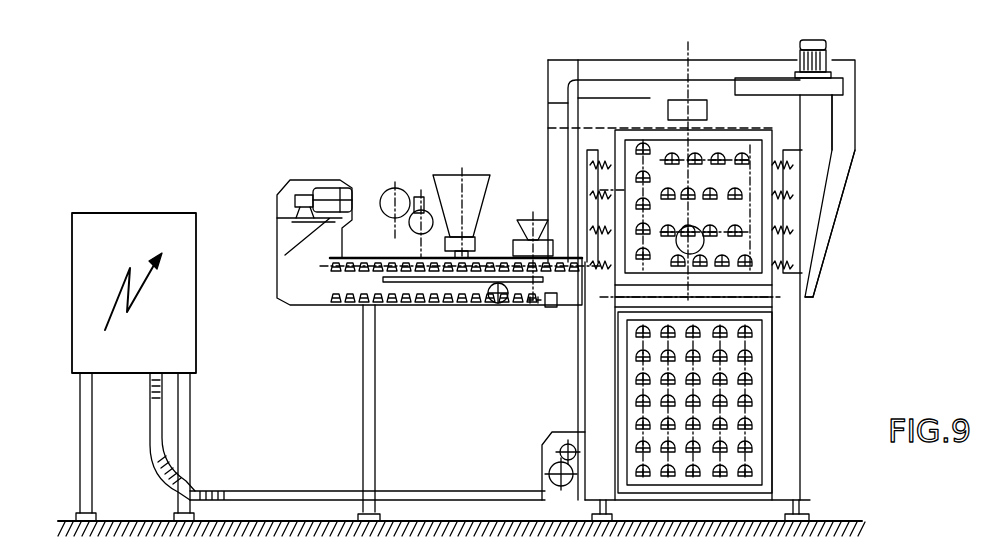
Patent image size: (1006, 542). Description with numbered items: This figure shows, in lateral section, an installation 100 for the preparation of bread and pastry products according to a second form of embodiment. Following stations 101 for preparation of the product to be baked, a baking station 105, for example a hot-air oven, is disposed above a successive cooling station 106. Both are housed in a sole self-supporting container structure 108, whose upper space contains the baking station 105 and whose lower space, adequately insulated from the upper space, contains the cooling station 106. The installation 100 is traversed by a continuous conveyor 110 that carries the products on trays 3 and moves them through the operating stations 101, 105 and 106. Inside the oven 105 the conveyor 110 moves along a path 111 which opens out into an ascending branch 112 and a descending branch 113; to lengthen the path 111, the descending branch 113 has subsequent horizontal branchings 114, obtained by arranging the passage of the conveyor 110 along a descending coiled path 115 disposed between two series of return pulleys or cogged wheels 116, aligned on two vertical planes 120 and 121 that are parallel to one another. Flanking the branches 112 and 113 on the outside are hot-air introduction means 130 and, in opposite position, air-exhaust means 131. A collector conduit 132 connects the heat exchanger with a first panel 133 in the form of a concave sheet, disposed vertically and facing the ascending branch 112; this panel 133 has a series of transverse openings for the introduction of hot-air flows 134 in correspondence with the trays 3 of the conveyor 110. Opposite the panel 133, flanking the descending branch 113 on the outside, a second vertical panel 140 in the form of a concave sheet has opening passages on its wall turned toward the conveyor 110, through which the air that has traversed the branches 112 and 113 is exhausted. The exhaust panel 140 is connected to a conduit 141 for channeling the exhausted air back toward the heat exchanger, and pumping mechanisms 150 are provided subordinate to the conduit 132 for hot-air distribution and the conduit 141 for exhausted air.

The trays 3 is at (612, 183).
The installation 100 is at (812, 322).
The stations for preparation of the product to be baked 101 is at (300, 163).
The baking station 105 is at (760, 178).
The cooling station 106 is at (732, 415).
The self-supporting container structure 108 is at (790, 378).
The continuous conveyor 110 is at (595, 315).
The path 111 is at (610, 190).
The ascending branch 112 is at (610, 128).
The descending branch 113 is at (760, 228).
The horizontal branchings 114 is at (793, 258).
The descending coiled path 115 is at (780, 298).
The return pulleys or cogged wheels 116 is at (800, 132).
The vertical plane 120 is at (640, 105).
The vertical plane 121 is at (750, 85).
The hot-air introduction means 130 is at (560, 103).
The air-exhaust means 131 is at (815, 160).
The collector conduit 132 is at (568, 92).
The first panel 133 is at (588, 197).
The hot-air flows 134 is at (600, 237).
The second vertical panel 140 is at (820, 272).
The conduit 141 is at (848, 100).
The pumping mechanisms 150 is at (828, 45).